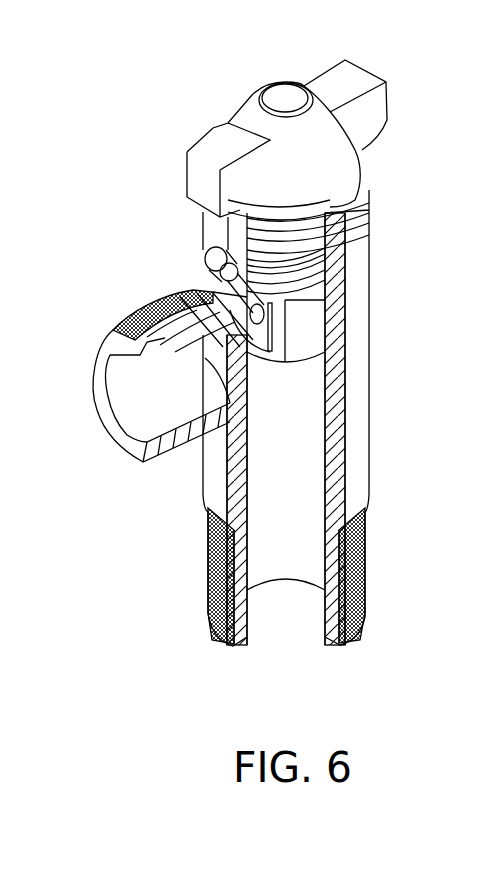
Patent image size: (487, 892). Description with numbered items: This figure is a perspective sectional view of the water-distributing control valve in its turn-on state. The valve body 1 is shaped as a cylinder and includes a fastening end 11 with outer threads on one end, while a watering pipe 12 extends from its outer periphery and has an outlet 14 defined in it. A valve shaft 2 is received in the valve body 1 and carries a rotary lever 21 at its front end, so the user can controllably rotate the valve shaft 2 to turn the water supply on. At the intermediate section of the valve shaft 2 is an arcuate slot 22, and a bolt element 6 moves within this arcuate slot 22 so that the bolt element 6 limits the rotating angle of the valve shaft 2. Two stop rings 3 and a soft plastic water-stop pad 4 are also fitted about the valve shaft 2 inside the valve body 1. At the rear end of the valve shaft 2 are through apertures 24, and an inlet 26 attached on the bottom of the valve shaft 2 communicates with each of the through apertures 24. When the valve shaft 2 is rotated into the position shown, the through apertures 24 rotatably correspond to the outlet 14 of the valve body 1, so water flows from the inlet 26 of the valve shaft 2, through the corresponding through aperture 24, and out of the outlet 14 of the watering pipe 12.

The valve body 1 is at (381, 468).
The fastening end 11 is at (363, 603).
The watering pipe 12 is at (132, 440).
The outlet 14 is at (170, 312).
The valve shaft 2 is at (236, 240).
The rotary lever 21 is at (375, 72).
The arcuate slot 22 is at (315, 262).
The through apertures 24 is at (132, 317).
The inlet 26 is at (206, 264).
The stop rings 3 is at (335, 222).
The water-stop pad 4 is at (327, 327).
The bolt element 6 is at (208, 266).